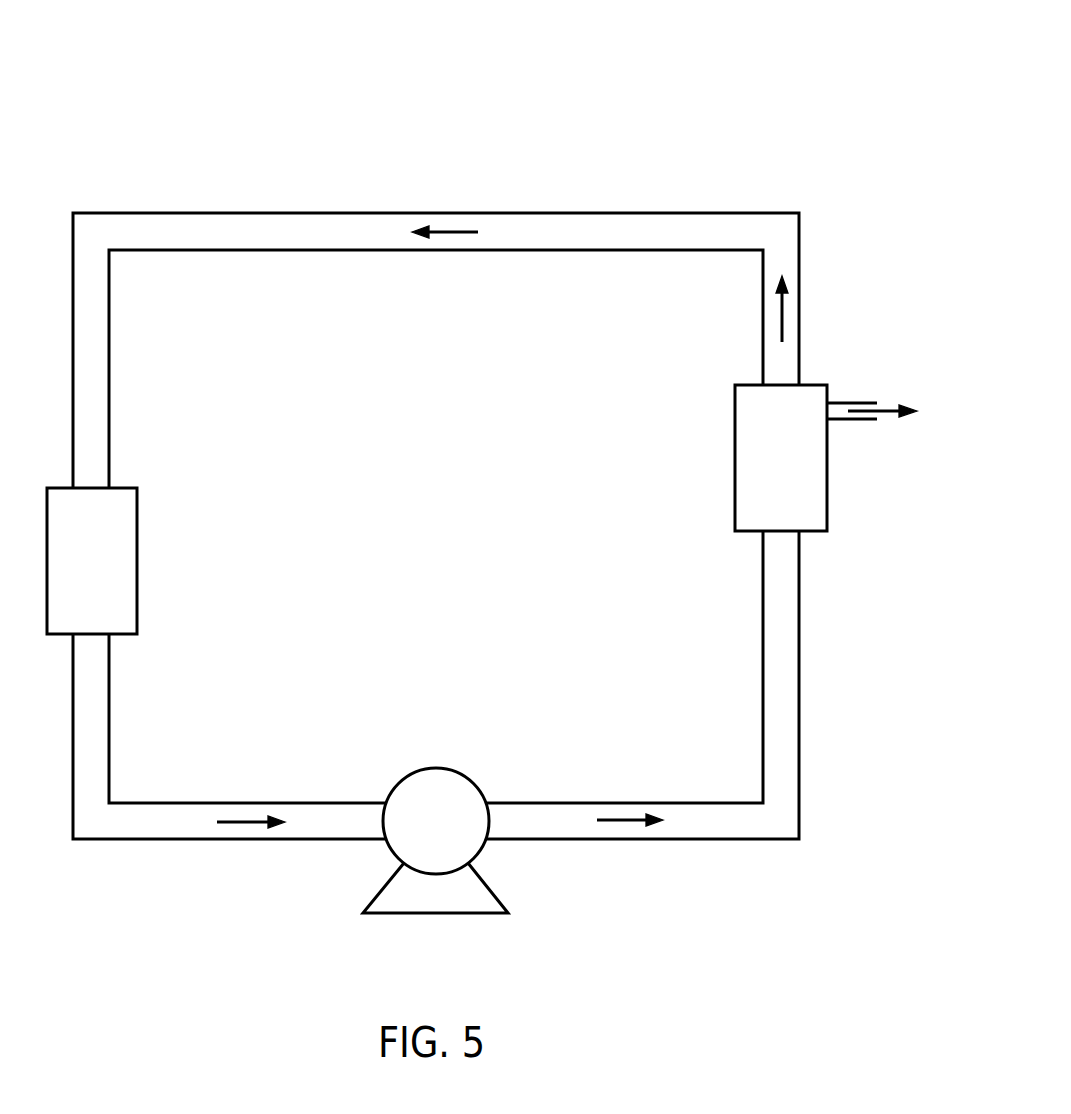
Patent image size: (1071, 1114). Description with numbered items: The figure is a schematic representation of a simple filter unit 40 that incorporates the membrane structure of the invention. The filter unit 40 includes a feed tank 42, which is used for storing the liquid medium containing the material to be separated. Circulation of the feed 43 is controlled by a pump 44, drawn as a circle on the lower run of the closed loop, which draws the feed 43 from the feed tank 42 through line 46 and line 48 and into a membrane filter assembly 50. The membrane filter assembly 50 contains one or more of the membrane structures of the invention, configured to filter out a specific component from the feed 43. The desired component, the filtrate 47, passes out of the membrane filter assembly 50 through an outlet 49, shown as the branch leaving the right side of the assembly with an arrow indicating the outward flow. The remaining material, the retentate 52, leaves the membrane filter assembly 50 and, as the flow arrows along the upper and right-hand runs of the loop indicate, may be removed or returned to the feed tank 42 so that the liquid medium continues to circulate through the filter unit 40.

The filter unit 40 is at (670, 73).
The feed tank 42 is at (138, 561).
The feed 43 is at (103, 535).
The pump 44 is at (437, 768).
The line 46 is at (109, 720).
The filtrate 47 is at (883, 402).
The line 48 is at (643, 802).
The outlet 49 is at (852, 421).
The membrane filter assembly 50 is at (735, 458).
The retentate 52 is at (763, 329).